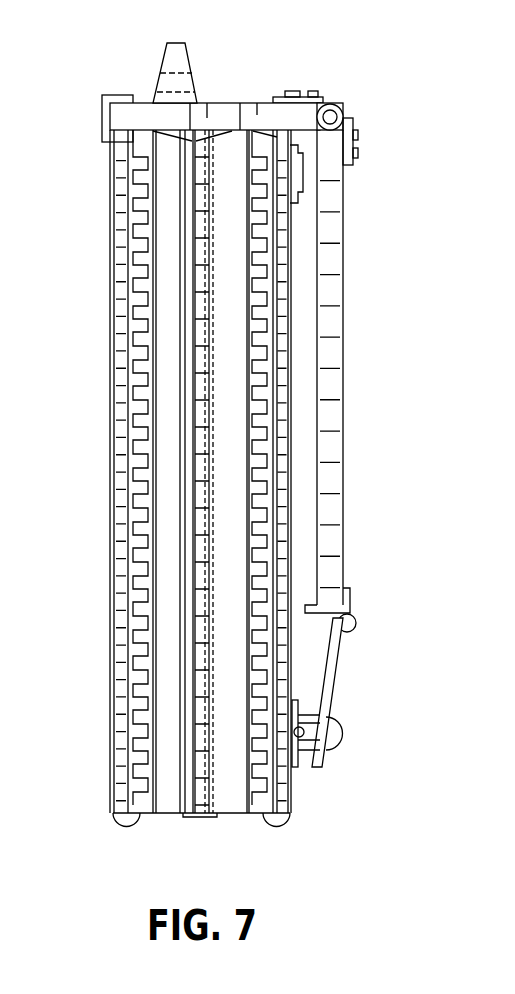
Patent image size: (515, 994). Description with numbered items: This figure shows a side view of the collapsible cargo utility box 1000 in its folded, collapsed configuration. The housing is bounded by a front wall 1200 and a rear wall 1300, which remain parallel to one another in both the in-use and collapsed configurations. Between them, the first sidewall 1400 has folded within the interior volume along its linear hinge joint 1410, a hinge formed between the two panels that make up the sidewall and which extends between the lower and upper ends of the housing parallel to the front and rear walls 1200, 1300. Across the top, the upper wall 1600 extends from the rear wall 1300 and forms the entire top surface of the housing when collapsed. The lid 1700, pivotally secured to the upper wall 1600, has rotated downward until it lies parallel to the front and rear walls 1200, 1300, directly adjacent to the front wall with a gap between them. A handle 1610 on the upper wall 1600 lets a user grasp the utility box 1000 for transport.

The collapsible cargo utility box 1000 is at (237, 453).
The front wall 1200 is at (292, 776).
The rear wall 1300 is at (110, 333).
The first sidewall 1400 is at (168, 785).
The hinge joint 1410 is at (200, 785).
The upper wall 1600 is at (221, 113).
The handle 1610 is at (158, 56).
The lid 1700 is at (344, 313).